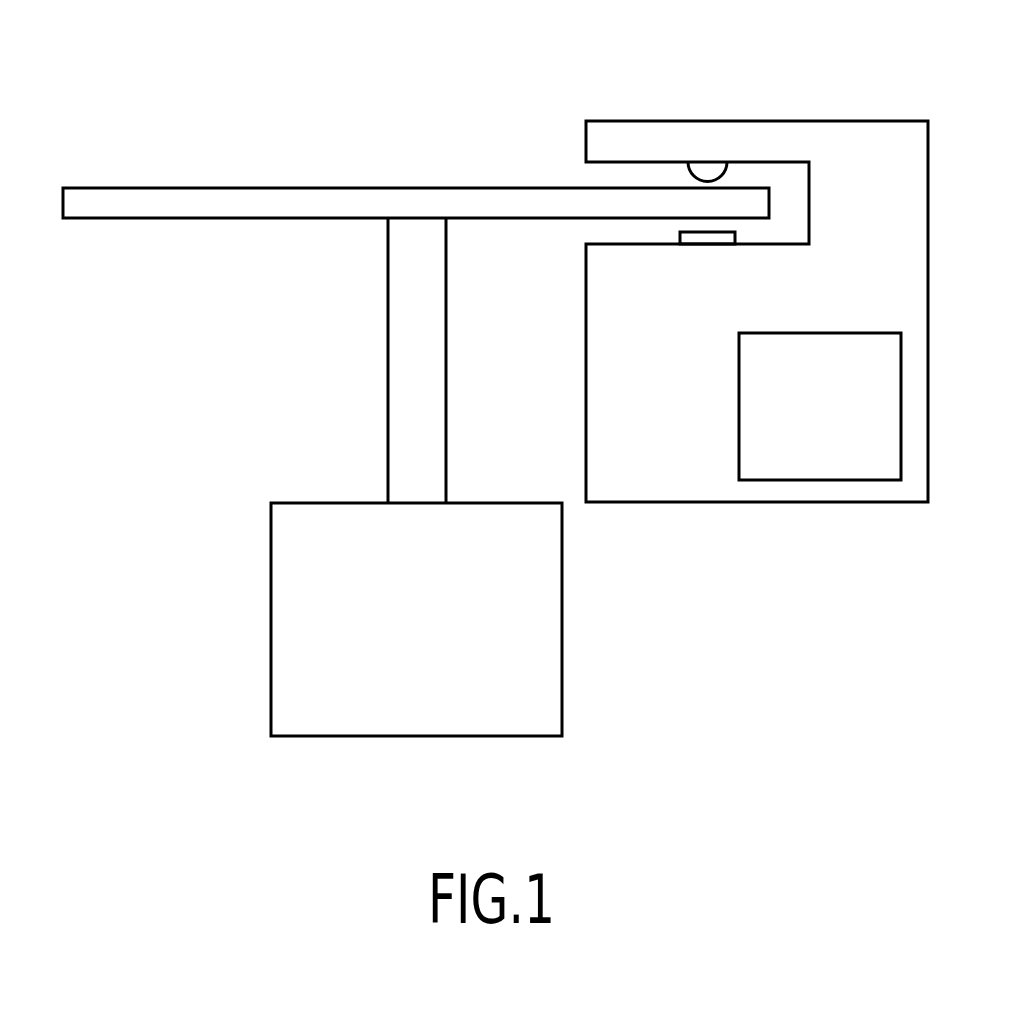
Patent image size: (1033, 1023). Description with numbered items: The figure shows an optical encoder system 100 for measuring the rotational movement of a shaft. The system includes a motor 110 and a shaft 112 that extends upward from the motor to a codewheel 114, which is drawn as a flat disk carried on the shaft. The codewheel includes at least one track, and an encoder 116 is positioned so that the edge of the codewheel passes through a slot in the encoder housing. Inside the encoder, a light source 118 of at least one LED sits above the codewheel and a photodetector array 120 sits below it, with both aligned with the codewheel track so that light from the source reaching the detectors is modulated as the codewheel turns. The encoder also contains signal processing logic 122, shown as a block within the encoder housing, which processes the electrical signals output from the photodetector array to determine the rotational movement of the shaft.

The optical encoder system 100 is at (152, 63).
The motor 110 is at (271, 622).
The shaft 112 is at (388, 350).
The codewheel 114 is at (316, 188).
The encoder 116 is at (851, 121).
The light source 118 is at (692, 170).
The photodetector array 120 is at (680, 233).
The signal processing logic 122 is at (805, 333).